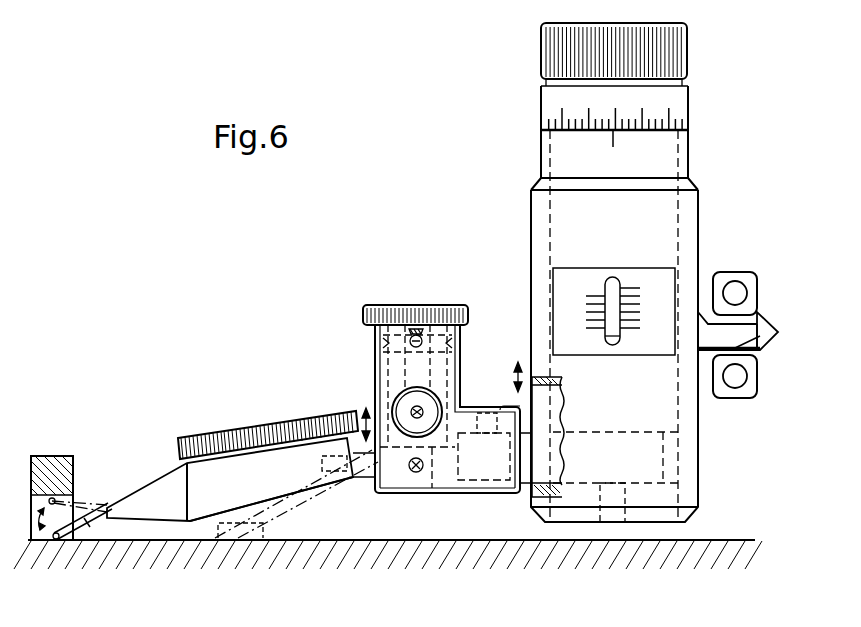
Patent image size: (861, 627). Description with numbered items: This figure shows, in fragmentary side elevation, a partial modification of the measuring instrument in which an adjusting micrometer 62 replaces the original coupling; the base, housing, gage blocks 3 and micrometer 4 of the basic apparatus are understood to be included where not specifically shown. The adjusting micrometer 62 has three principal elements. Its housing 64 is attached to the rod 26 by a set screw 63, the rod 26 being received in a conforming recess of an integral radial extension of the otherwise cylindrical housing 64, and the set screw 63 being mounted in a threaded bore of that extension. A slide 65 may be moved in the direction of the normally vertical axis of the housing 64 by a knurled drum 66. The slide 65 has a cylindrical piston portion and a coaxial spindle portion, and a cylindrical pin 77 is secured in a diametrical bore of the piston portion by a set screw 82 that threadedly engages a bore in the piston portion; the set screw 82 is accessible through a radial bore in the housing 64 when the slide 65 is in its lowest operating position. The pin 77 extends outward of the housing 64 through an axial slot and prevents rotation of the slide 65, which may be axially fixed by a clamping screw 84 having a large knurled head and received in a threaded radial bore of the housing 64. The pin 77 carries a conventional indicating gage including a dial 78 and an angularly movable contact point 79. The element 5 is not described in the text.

The gage blocks 3 is at (746, 281).
The micrometer 4 is at (712, 226).
The clamping pin 5 is at (762, 340).
The rod 26 is at (527, 493).
The adjusting micrometer 62 is at (376, 351).
The set screw 63 is at (487, 413).
The housing 64 is at (462, 346).
The slide 65 is at (392, 405).
The knurled drum 66 is at (391, 305).
The pin 77 is at (402, 473).
The dial 78 is at (207, 433).
The contact point 79 is at (85, 528).
The set screw 82 is at (420, 471).
The clamping screw 84 is at (397, 420).